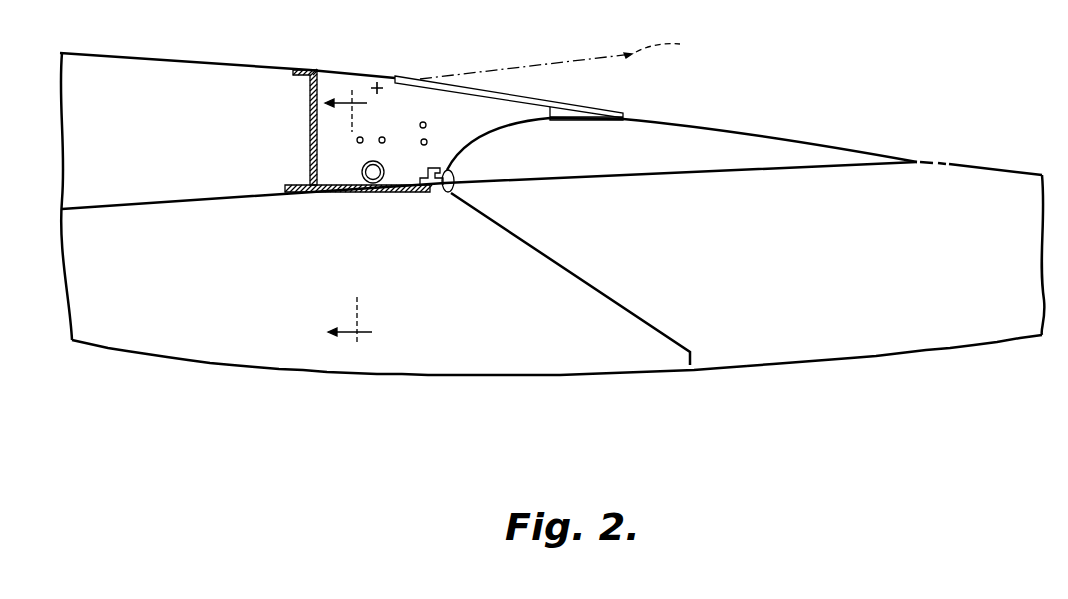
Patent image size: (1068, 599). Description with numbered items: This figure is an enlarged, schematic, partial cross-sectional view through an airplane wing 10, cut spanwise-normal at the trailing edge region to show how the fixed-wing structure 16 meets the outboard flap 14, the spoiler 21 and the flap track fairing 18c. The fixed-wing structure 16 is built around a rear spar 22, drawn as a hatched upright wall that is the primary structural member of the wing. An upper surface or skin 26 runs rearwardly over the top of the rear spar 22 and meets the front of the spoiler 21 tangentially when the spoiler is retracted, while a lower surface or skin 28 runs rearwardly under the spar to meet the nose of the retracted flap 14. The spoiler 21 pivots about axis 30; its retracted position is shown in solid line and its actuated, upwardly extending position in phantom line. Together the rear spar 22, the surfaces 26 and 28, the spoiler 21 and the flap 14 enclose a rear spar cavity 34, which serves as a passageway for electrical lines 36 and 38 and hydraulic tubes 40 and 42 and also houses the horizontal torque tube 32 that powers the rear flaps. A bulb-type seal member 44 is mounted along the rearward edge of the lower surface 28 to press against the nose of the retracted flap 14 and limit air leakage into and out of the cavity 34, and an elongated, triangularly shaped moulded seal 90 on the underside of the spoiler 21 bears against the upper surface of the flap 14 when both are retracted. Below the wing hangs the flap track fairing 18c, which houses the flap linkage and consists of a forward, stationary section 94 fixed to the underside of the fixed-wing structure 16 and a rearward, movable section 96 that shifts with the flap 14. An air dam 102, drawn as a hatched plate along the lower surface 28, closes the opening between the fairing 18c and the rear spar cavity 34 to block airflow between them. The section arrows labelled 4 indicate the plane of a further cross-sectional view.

The airplane wing 10 is at (38, 224).
The fixed-wing structure 16 is at (172, 78).
The upper surface or skin 26 is at (358, 75).
The axis 30 is at (382, 75).
The rear spar cavity 34 is at (405, 105).
The rear spar 22 is at (313, 133).
The air dam 102 is at (340, 195).
The lower surface or skin 28 is at (193, 205).
The spoiler 21 is at (476, 92).
The triangularly shaped moulded seal 90 is at (570, 108).
The outboard flap 14 is at (693, 142).
The rearward movable section 96 is at (892, 353).
The forward stationary section 94 is at (272, 369).
The flap track fairing 18c is at (498, 378).
The bulb-type seal member 44 is at (448, 194).
The torque tube 32 is at (362, 172).
The electrical line 36 is at (357, 142).
The electrical line 38 is at (385, 143).
The hydraulic tube 40 is at (427, 123).
The hydraulic tube 42 is at (428, 141).
The section line 4- 4 is at (352, 216).